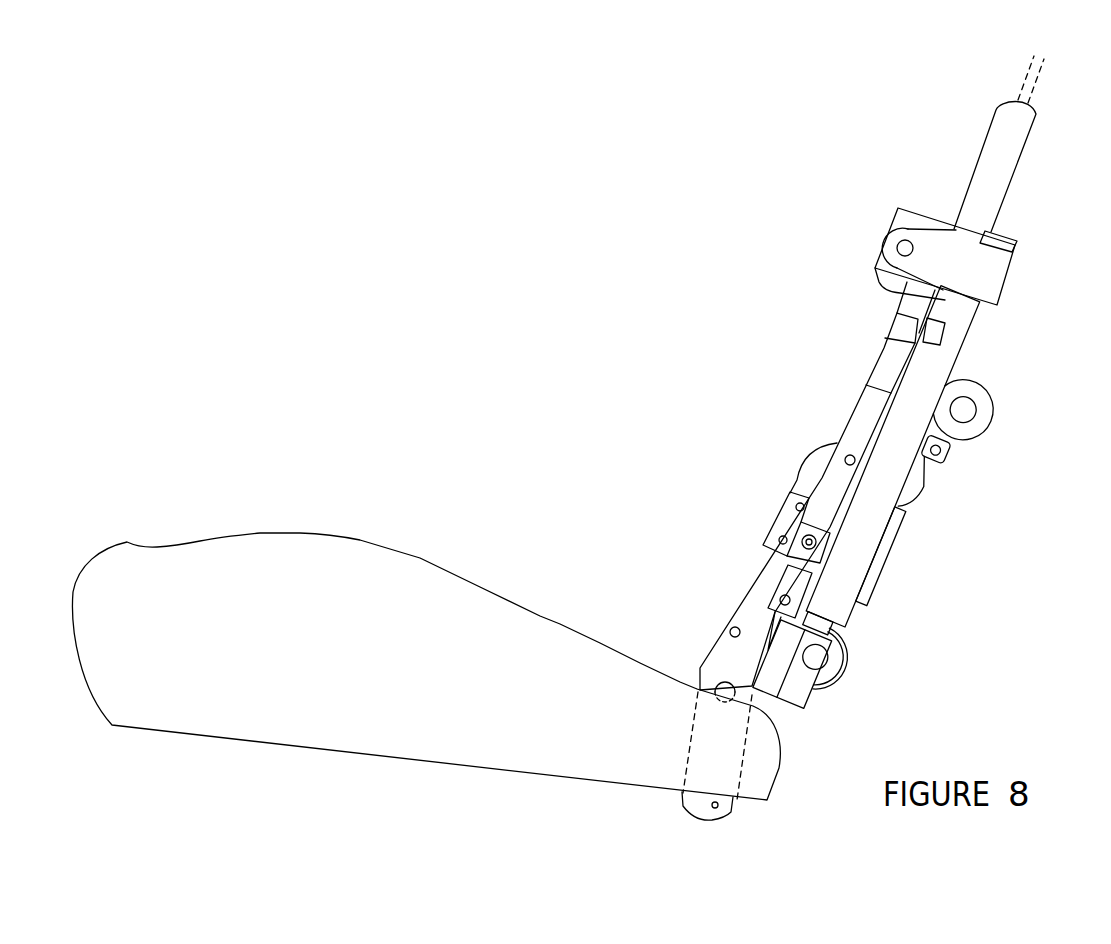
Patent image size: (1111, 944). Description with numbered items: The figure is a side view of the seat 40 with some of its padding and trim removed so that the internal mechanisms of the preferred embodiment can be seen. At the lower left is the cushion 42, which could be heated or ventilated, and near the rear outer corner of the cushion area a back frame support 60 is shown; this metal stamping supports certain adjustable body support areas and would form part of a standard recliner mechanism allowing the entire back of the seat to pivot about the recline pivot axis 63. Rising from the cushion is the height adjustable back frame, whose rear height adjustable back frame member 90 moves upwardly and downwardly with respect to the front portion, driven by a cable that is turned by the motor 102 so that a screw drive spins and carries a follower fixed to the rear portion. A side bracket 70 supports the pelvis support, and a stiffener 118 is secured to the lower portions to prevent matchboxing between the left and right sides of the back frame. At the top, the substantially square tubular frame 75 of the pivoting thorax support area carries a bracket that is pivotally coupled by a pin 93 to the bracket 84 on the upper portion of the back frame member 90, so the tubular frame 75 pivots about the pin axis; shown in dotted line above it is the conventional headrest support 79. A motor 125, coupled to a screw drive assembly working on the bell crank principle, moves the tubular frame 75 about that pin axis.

The seat 40 is at (752, 418).
The cushion 42 is at (432, 692).
The back frame support 60 is at (727, 805).
The recline pivot axis 63 is at (752, 688).
The side bracket 70 is at (792, 523).
The tubular frame 75 is at (984, 191).
The headrest support 79 is at (1040, 84).
The bracket 84 is at (973, 268).
The height adjustable back frame member 90 is at (1016, 241).
The pin 93 is at (887, 243).
The motor 102 is at (846, 670).
The stiffener 118 is at (893, 547).
The motor 125 is at (965, 390).